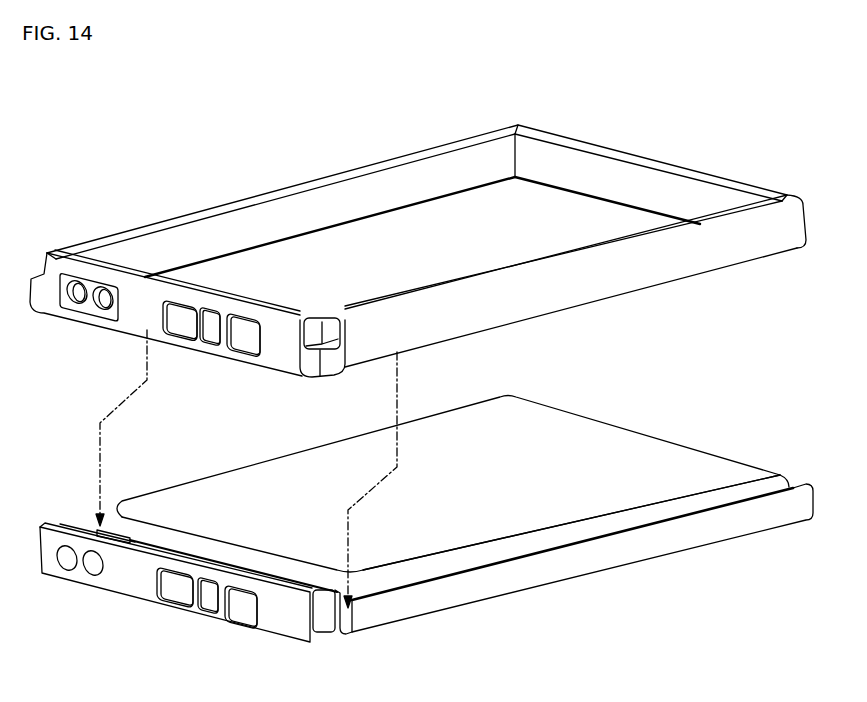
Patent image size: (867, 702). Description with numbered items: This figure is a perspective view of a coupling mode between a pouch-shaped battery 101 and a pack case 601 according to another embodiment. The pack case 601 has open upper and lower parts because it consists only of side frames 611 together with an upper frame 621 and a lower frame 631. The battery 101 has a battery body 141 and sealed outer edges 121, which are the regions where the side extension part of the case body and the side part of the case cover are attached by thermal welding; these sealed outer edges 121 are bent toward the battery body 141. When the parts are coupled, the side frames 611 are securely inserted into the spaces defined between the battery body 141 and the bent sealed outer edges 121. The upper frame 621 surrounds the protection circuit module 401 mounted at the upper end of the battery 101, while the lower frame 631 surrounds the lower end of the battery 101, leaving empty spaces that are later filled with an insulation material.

The battery 101 is at (480, 522).
The sealed outer edges 121 is at (518, 578).
The battery body 141 is at (700, 500).
The protection circuit module (PCM) 401 is at (130, 588).
The pack case 601 is at (418, 263).
The side frames 611 is at (654, 273).
The upper frame 621 is at (268, 358).
The lower frame 631 is at (638, 152).